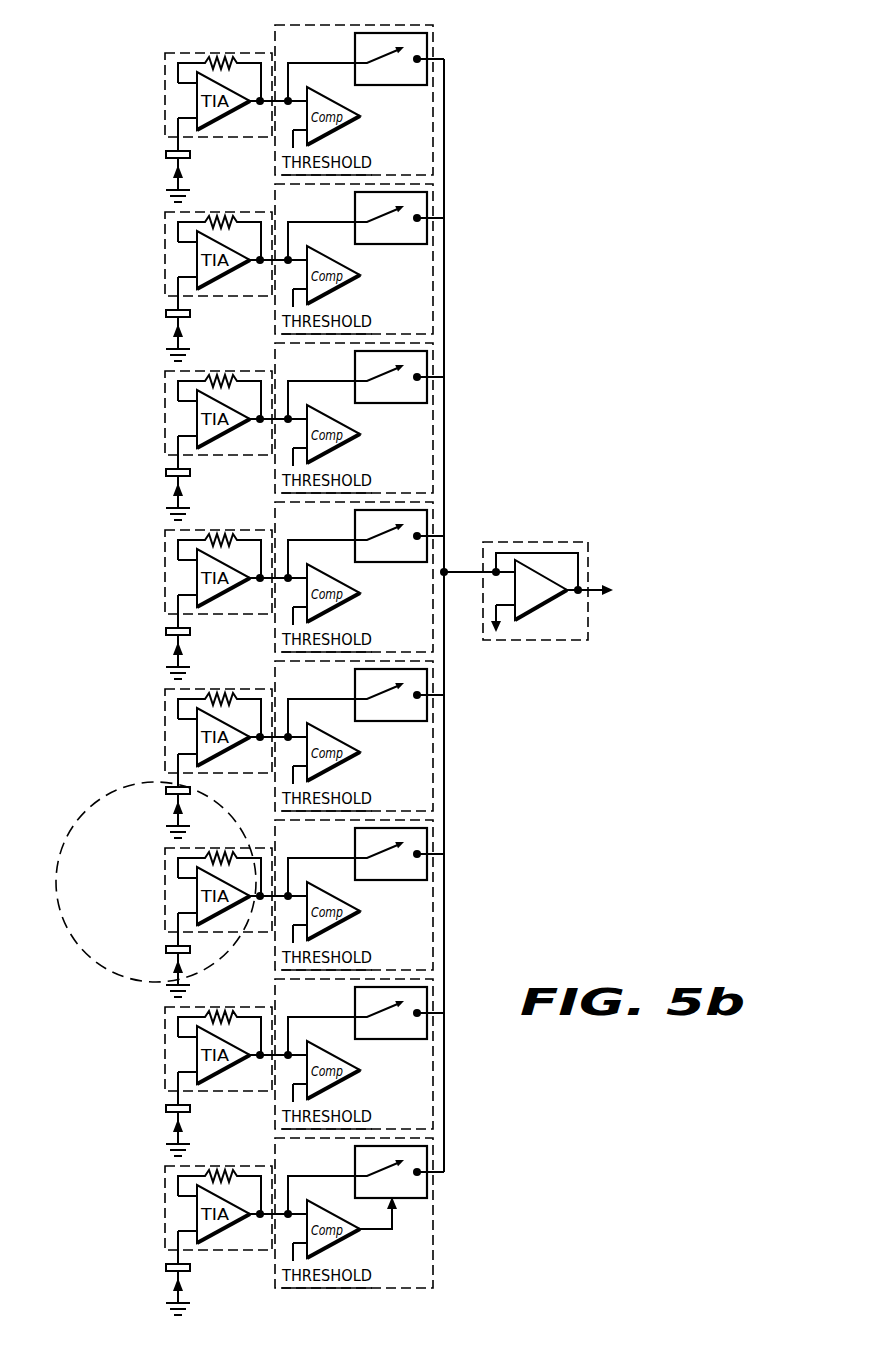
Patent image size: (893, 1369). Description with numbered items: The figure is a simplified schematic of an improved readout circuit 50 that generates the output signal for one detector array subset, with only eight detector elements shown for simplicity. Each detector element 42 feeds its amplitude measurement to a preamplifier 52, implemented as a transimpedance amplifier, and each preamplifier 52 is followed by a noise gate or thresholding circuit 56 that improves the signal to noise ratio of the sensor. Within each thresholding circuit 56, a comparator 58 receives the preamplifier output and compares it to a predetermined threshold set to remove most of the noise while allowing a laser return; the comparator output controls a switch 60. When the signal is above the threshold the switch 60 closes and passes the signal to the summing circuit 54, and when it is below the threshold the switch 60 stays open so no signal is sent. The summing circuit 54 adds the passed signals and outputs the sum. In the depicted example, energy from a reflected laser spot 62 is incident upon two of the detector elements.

The detector element 42 is at (176, 173).
The readout circuit 50 is at (524, 98).
The preamplifier 52 is at (165, 61).
The summing circuit 54 is at (535, 542).
The thresholding circuit 56 is at (434, 42).
The comparator 58 is at (362, 122).
The switch 60 is at (355, 47).
The laser spot 62 is at (110, 972).